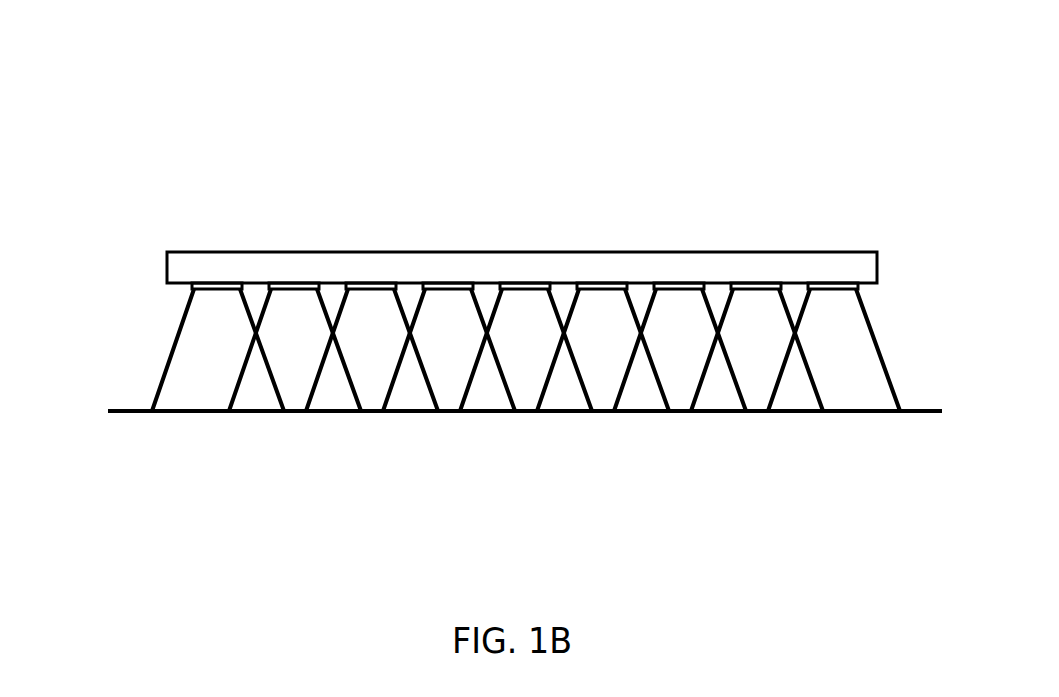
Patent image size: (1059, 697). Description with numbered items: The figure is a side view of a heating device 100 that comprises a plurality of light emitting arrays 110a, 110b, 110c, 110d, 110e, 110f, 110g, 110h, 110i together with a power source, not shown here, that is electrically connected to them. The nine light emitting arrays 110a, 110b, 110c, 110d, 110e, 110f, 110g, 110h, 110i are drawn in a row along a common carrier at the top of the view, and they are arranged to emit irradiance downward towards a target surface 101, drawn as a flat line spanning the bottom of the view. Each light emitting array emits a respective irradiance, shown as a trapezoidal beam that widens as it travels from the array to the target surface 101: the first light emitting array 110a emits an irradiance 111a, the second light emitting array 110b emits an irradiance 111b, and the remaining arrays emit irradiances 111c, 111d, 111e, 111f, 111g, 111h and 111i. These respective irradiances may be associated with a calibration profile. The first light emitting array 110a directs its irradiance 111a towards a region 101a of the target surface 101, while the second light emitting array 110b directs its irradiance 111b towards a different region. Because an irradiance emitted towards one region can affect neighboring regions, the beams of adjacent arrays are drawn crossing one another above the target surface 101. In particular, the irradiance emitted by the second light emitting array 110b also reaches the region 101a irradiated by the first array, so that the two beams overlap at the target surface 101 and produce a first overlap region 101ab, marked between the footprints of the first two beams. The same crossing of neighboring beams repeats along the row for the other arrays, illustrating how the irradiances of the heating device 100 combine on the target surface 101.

The heating device 100 is at (518, 130).
The target surface 101 is at (930, 410).
The region of the target surface 101a is at (168, 402).
The first overlap region 101ab is at (245, 400).
The first light emitting array 110a is at (216, 287).
The second light emitting array 110b is at (293, 287).
The light emitting array 110c is at (370, 287).
The light emitting array 110d is at (447, 287).
The light emitting array 110e is at (524, 287).
The light emitting array 110f is at (601, 287).
The light emitting array 110g is at (678, 287).
The light emitting array 110h is at (755, 287).
The light emitting array 110i is at (832, 287).
The irradiance 111a is at (200, 390).
The irradiance 111b is at (292, 390).
The irradiance 111c is at (372, 390).
The irradiance 111d is at (450, 390).
The irradiance 111e is at (525, 390).
The irradiance 111f is at (598, 390).
The irradiance 111g is at (680, 390).
The irradiance 111h is at (755, 390).
The irradiance 111i is at (847, 390).